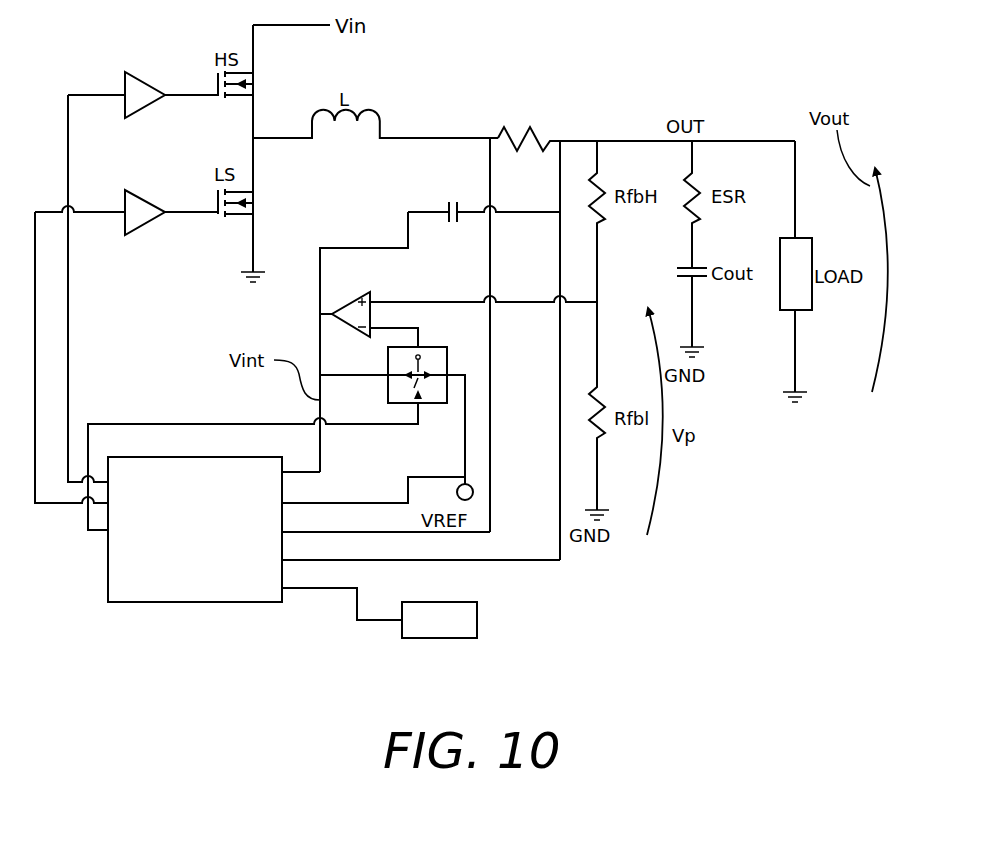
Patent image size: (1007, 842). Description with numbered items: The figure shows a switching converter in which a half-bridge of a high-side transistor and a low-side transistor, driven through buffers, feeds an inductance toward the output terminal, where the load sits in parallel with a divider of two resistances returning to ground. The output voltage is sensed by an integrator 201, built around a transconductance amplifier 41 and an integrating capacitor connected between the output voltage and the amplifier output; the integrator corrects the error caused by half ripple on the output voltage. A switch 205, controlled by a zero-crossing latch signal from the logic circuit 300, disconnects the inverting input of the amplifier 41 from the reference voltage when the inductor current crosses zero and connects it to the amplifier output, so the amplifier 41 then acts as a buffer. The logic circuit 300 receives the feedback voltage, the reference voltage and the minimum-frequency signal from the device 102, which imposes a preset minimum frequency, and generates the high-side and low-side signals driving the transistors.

The integrator 201 is at (346, 231).
The transconductance amplifier 41 is at (344, 306).
The switch 205 is at (454, 352).
The logic circuit 300 is at (166, 567).
The device for imposing a preset minimum frequency 102 is at (423, 631).